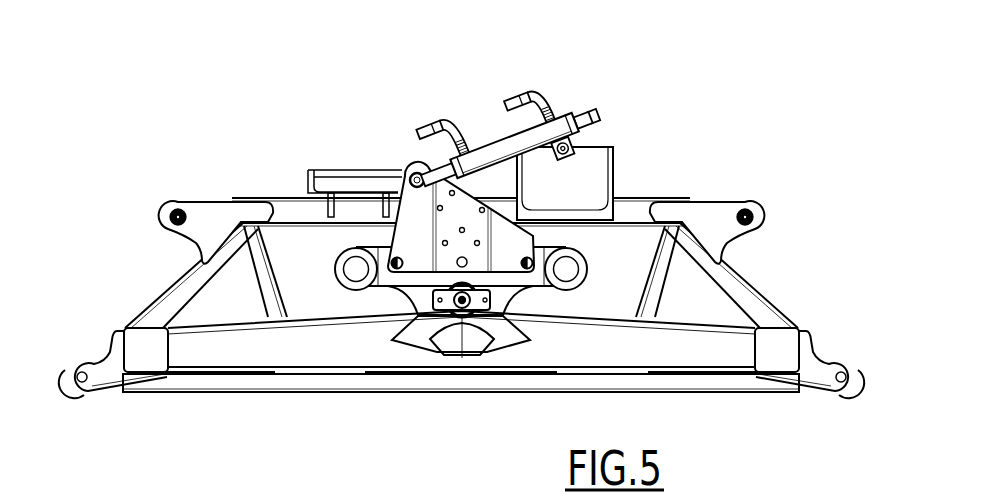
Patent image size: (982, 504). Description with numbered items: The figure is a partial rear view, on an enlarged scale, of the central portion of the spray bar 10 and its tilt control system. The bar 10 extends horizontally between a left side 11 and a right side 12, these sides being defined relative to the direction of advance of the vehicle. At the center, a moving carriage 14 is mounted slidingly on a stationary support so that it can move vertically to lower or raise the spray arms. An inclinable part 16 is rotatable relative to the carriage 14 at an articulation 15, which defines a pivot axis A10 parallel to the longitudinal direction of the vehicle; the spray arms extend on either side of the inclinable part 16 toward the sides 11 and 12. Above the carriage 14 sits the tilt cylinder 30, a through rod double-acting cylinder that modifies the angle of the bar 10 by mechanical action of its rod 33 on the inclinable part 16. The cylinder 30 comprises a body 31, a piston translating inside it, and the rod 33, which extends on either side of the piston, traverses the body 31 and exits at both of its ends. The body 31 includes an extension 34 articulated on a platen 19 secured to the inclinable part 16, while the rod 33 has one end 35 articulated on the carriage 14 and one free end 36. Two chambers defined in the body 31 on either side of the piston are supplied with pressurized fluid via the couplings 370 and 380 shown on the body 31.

The bar 10 is at (224, 92).
The left side 11 is at (71, 283).
The right side 12 is at (841, 278).
The moving carriage 14 is at (418, 284).
The articulation 15 is at (462, 303).
The inclinable part 16 is at (698, 347).
The platen 19 is at (588, 187).
The tilt cylinder 30 is at (658, 97).
The body 31 is at (500, 138).
The rod 33 is at (582, 108).
The extension 34 is at (572, 155).
The end 35 is at (412, 175).
The free end 36 is at (603, 108).
The coupling 370 is at (430, 125).
The coupling 380 is at (532, 95).
The pivot axis A10 is at (462, 303).